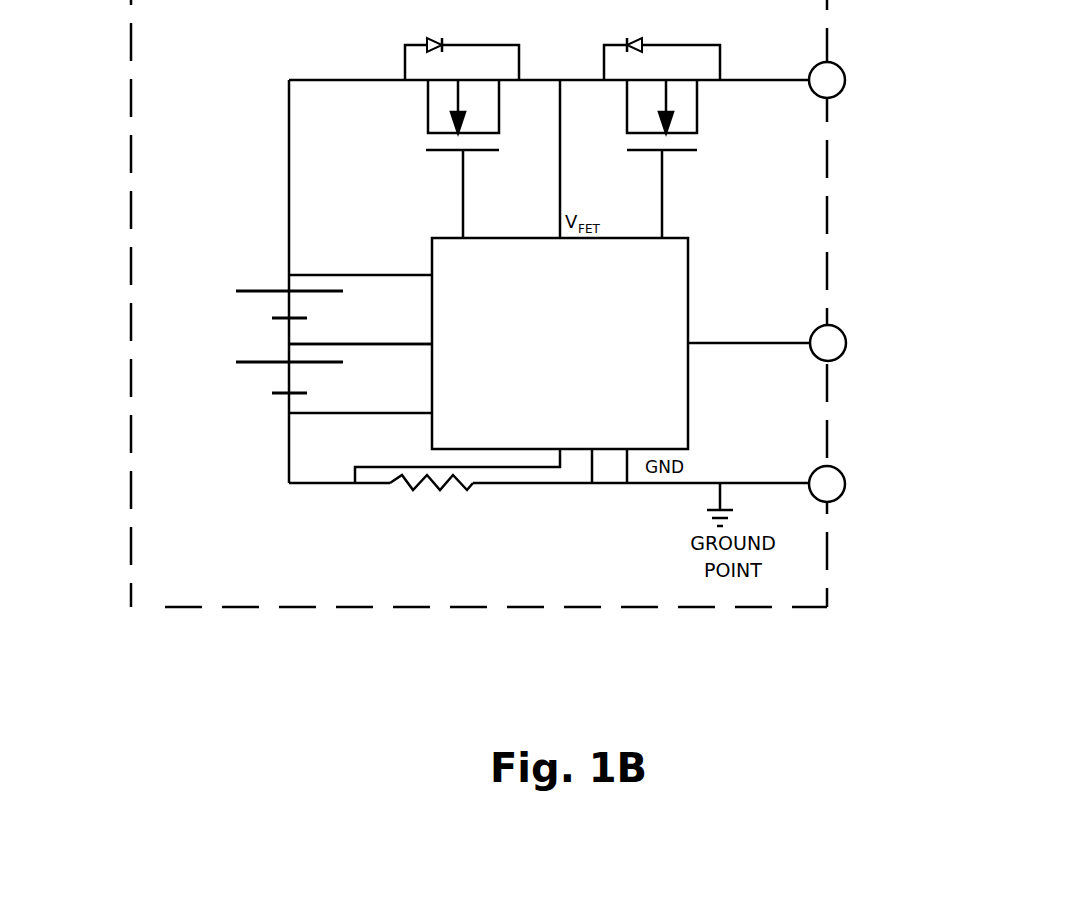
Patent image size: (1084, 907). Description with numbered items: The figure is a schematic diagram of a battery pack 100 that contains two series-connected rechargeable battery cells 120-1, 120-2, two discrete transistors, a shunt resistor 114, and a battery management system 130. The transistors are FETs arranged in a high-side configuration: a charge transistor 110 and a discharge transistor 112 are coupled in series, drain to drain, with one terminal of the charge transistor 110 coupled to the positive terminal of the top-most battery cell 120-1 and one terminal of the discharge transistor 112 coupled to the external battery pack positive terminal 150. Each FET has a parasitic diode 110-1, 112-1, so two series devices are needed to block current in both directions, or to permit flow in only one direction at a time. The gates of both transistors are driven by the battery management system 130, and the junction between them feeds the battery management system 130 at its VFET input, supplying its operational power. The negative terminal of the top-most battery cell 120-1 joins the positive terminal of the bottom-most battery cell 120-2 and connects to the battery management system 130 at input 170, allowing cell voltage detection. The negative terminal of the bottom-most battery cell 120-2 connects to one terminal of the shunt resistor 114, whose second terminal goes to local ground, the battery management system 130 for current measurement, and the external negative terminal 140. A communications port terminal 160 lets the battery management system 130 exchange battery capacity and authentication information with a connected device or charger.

The battery pack 100 is at (635, 608).
The charge transistor 110 is at (404, 138).
The parasitic diode 110-1 is at (485, 45).
The discharge transistor 112 is at (727, 136).
The parasitic diode 112-1 is at (680, 45).
The shunt resistor 114 is at (412, 486).
The battery cell 120-1 is at (255, 290).
The battery cell 120-2 is at (255, 362).
The battery management system 130 is at (690, 266).
The negative terminal 140 is at (843, 471).
The positive terminal 150 is at (843, 65).
The communications port terminal 160 is at (841, 330).
The input 170 is at (357, 345).